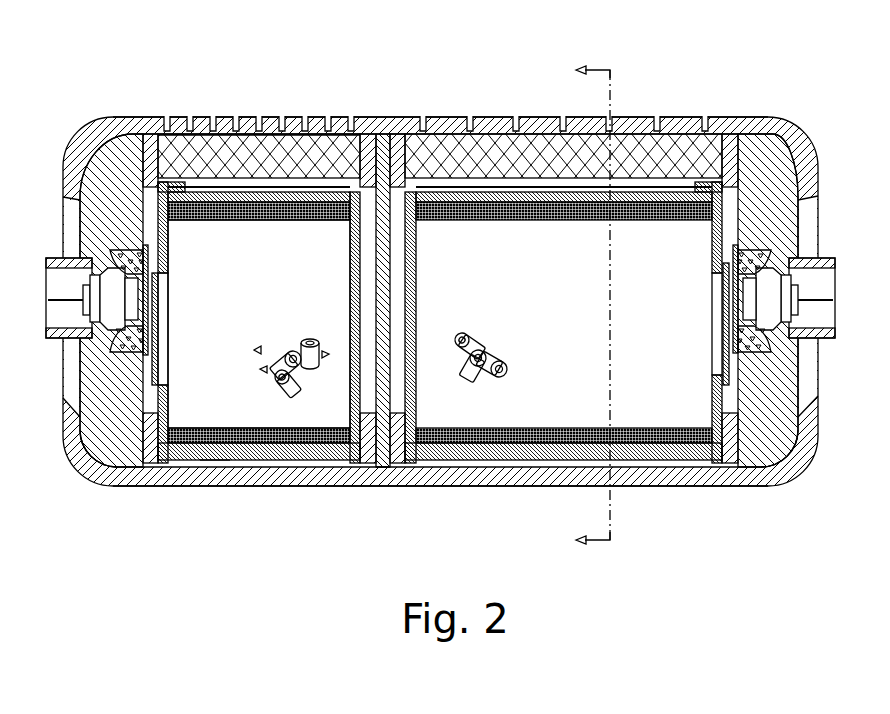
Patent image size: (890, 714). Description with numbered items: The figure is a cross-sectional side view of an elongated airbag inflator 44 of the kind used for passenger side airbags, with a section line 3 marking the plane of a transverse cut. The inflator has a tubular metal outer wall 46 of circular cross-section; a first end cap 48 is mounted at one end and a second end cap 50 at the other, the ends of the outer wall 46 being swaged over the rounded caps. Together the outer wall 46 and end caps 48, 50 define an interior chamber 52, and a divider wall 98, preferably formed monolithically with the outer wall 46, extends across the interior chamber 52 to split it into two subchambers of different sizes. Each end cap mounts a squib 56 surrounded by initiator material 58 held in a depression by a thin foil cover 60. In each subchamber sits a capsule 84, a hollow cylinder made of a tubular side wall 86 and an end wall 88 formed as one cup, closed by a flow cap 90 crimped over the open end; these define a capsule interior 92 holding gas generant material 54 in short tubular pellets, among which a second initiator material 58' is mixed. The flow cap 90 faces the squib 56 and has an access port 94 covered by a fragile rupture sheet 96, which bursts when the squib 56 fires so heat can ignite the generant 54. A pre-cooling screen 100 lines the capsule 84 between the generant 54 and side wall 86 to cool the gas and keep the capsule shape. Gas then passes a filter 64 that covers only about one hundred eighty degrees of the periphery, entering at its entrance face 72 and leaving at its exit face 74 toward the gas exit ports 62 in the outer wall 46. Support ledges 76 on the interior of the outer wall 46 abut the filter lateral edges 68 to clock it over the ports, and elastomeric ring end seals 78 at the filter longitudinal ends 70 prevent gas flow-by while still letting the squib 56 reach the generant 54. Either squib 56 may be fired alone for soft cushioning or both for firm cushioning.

The inflator 44 is at (762, 104).
The outer wall 46 is at (127, 117).
The first end cap 48 is at (85, 162).
The second end cap 50 is at (793, 387).
The interior chamber 52 is at (360, 487).
The gas generant material 54 is at (282, 386).
The squib 56 is at (112, 315).
The initiator material 58 is at (389, 335).
The initiator material 58' is at (299, 335).
The foil cover 60 is at (147, 262).
The gas exit ports 62 is at (320, 125).
The filter 64 is at (262, 148).
The lateral edges 68 is at (47, 298).
The longitudinal ends 70 is at (145, 140).
The entrance face 72 is at (258, 182).
The exit face 74 is at (200, 137).
The support ledges 76 is at (47, 332).
The end seal 78 is at (127, 470).
The capsule 84 is at (214, 466).
The tubular side wall 86 is at (270, 462).
The end wall 88 is at (352, 284).
The flow cap 90 is at (168, 409).
The capsule interior 92 is at (302, 414).
The access port 94 is at (165, 353).
The rupture sheet 96 is at (158, 318).
The divider wall 98 is at (392, 283).
The pre-cooling screen 100 is at (280, 206).
The section line 3- 3 is at (579, 306).